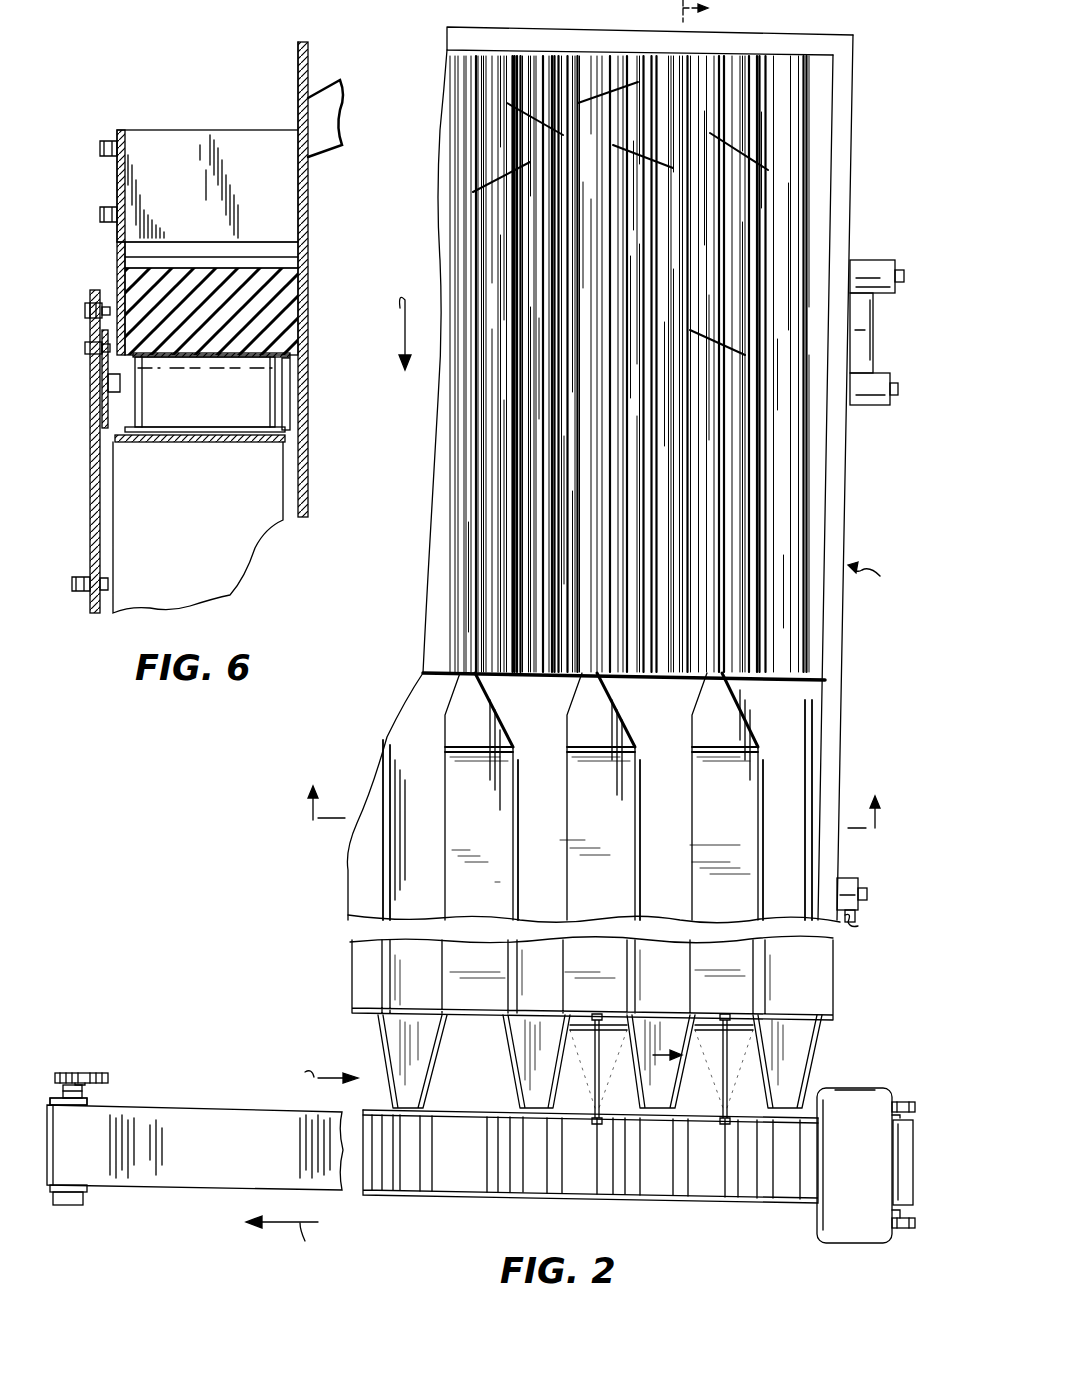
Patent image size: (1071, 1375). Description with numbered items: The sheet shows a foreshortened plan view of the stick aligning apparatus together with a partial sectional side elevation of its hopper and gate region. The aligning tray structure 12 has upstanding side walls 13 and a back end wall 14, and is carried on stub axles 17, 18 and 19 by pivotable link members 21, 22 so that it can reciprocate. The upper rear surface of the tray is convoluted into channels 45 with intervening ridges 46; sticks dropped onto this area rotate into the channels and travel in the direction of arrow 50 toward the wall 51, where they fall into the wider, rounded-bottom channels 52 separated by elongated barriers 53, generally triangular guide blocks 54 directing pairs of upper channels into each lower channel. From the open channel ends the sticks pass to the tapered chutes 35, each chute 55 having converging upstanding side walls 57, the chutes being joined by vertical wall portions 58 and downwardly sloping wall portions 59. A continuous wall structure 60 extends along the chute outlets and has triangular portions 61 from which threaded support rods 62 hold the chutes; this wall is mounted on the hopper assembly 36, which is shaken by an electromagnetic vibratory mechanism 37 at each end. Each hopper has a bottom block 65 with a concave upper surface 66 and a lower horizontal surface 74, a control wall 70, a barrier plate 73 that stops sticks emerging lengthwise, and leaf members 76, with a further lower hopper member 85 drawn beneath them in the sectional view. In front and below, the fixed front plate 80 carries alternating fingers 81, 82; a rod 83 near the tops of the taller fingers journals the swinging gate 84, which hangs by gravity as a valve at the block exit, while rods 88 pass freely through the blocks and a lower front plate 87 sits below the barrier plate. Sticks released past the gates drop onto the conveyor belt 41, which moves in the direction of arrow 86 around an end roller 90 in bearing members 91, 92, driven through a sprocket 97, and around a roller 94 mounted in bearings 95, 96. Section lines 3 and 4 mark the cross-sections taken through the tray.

In FIG. 2, the aligning tray structure 12 is at (874, 582).
In FIG. 2, the upstanding side walls 13 is at (852, 167).
In FIG. 2, the back end wall 14 is at (508, 28).
In FIG. 2, the stub axle 17 is at (915, 262).
In FIG. 2, the stub axle 18 is at (870, 895).
In FIG. 2, the stub axle 19 is at (898, 392).
In FIG. 2, the link member 21 is at (873, 320).
In FIG. 2, the link member 22 is at (855, 927).
In FIG. 2, the tapered chutes 35 is at (318, 1069).
In FIG. 2, the hopper assembly 36 is at (473, 1228).
In FIG. 2, the electromagnetic vibratory mechanism 37 is at (847, 1088).
In FIG. 2, the conveyor belt 41 is at (922, 1163).
In FIG. 2, the channels 45 is at (645, 57).
In FIG. 2, the ridges 46 is at (777, 57).
In FIG. 2, the arrow 50 is at (388, 333).
In FIG. 2, the wall 51 is at (423, 676).
In FIG. 2, the channels 52 is at (533, 820).
In FIG. 2, the elongated barriers 53 is at (560, 888).
In FIG. 2, the guide blocks 54 is at (570, 760).
In FIG. 2, the chutes 55 is at (528, 1067).
In FIG. 6, the upstanding side walls 57 is at (343, 99).
In FIG. 2, the vertical wall portions 58 is at (615, 1028).
In FIG. 2, the downwardly sloping wall portions 59 is at (627, 1108).
In FIG. 6, the continuous wall structure 60 is at (308, 176).
In FIG. 2, the continuous wall structure 60 is at (360, 1108).
In FIG. 6, the upstanding generally triangular portions 61 is at (306, 82).
In FIG. 2, the threaded support rods 62 is at (597, 1075).
In FIG. 6, the bottom block 65 is at (302, 290).
In FIG. 6, the concave upper surface 66 is at (291, 266).
In FIG. 6, the wall 70 is at (238, 108).
In FIG. 6, the barrier plate 73 is at (120, 258).
In FIG. 6, the lower substantially horizontal surface 74 is at (300, 379).
In FIG. 6, the leaf members 76 is at (285, 420).
In FIG. 6, the front plate 80 is at (91, 502).
In FIG. 6, the fingers 81 is at (92, 433).
In FIG. 6, the fingers 82 is at (94, 301).
In FIG. 6, the rod 83 is at (96, 311).
In FIG. 6, the swinging gate 84 is at (285, 396).
In FIG. 6, the lower body 85 is at (287, 442).
In FIG. 2, the arrow 86 is at (282, 1241).
In FIG. 6, the lower front plate 87 is at (112, 381).
In FIG. 6, the rods 88 is at (96, 350).
In FIG. 2, the end roller 90 is at (90, 1102).
In FIG. 2, the bearing member 91 is at (63, 1090).
In FIG. 2, the bearing member 92 is at (53, 1207).
In FIG. 2, the roller 94 is at (907, 1205).
In FIG. 2, the bearing 95 is at (898, 1099).
In FIG. 2, the bearing 96 is at (907, 1230).
In FIG. 2, the sprocket 97 is at (66, 1072).
In FIG. 2, the section line 3 is at (690, 535).
In FIG. 2, the section line 4 is at (592, 793).